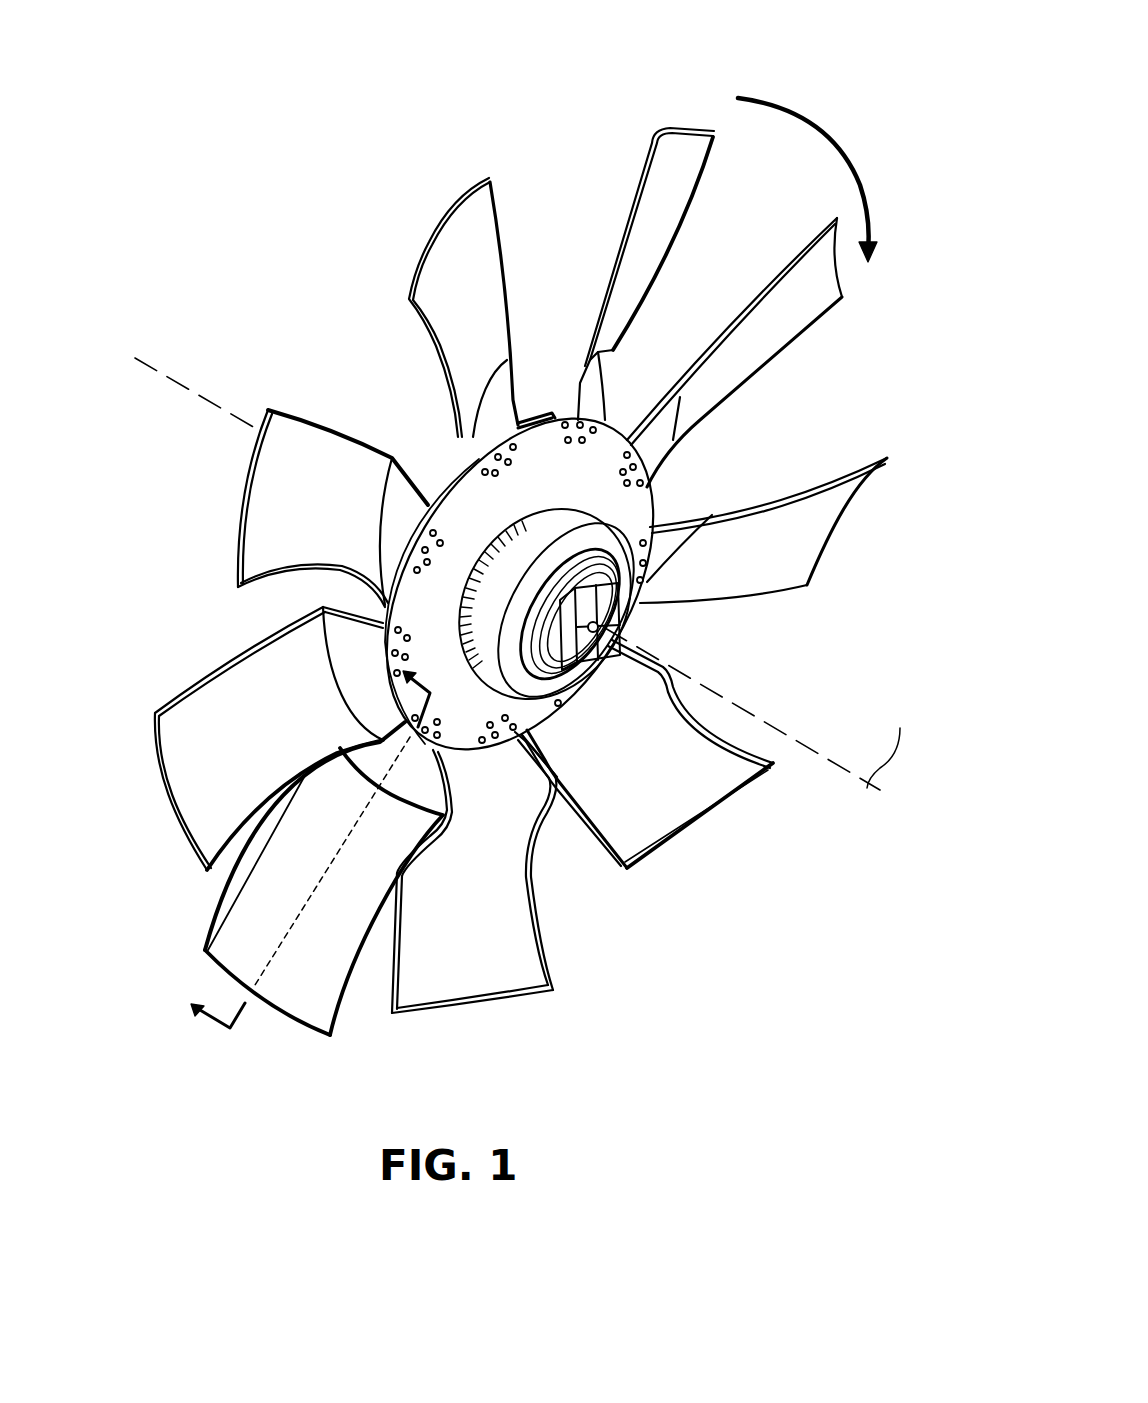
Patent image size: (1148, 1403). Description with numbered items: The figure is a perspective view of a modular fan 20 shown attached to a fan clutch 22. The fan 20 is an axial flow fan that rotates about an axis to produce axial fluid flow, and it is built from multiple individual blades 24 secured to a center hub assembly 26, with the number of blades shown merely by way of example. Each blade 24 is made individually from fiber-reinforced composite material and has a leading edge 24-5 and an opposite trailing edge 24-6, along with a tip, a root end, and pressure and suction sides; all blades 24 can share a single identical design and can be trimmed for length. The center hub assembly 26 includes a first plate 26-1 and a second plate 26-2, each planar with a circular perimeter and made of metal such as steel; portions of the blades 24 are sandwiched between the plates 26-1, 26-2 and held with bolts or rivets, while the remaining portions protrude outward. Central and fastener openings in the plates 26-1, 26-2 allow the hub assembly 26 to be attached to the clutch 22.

The fan 20 is at (507, 606).
The fan clutch 22 is at (620, 630).
The blades 24 is at (499, 636).
The leading edge 24-5 is at (223, 897).
The trailing edge 24-6 is at (340, 997).
The center hub assembly 26 is at (513, 529).
The first plate 26-1 is at (552, 410).
The second plate 26-2 is at (428, 485).